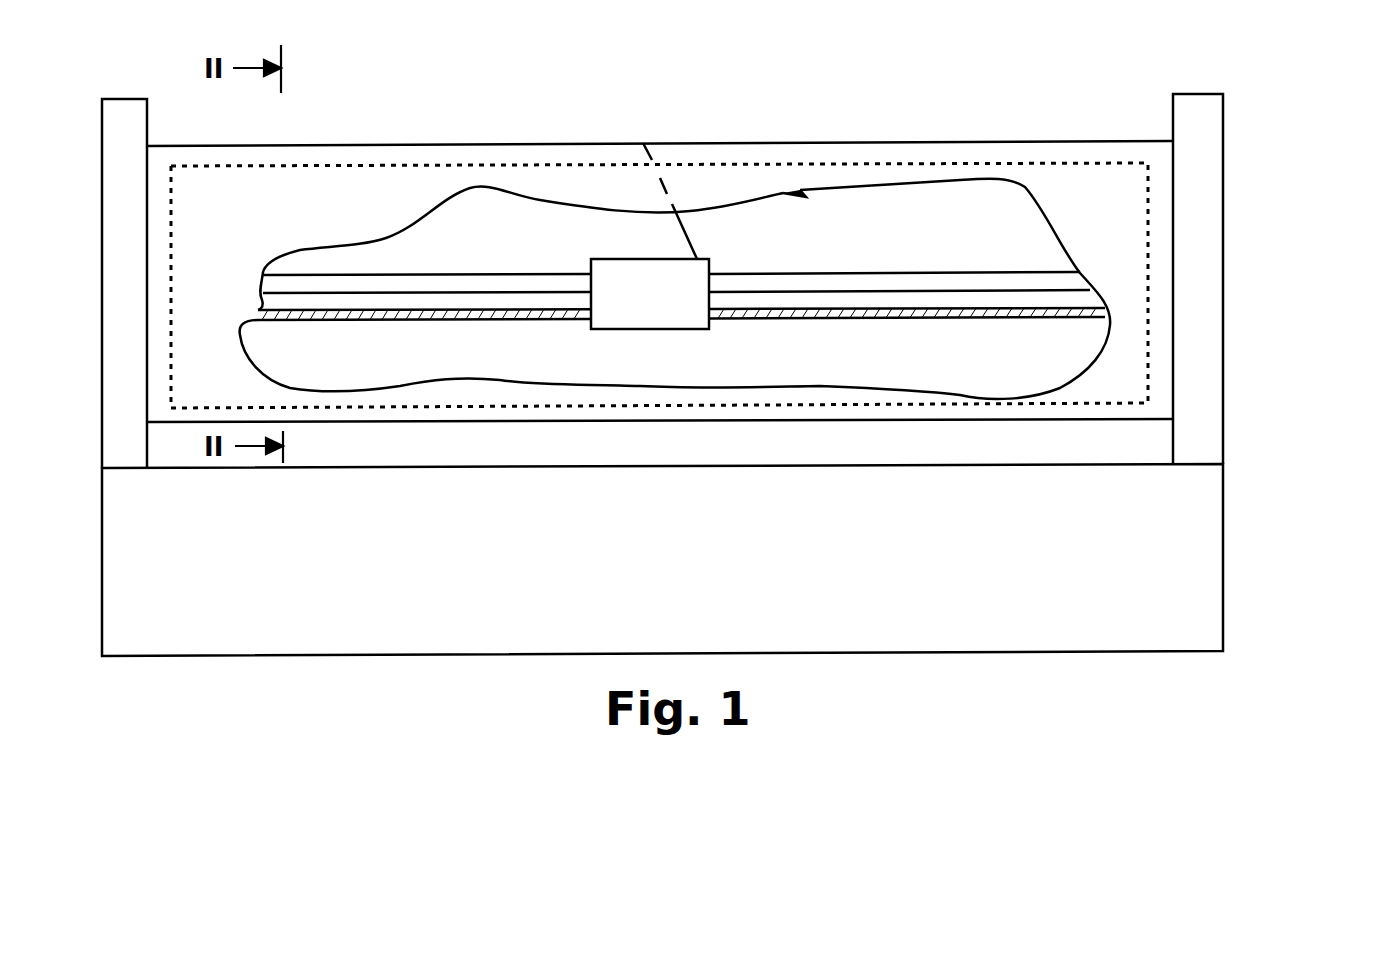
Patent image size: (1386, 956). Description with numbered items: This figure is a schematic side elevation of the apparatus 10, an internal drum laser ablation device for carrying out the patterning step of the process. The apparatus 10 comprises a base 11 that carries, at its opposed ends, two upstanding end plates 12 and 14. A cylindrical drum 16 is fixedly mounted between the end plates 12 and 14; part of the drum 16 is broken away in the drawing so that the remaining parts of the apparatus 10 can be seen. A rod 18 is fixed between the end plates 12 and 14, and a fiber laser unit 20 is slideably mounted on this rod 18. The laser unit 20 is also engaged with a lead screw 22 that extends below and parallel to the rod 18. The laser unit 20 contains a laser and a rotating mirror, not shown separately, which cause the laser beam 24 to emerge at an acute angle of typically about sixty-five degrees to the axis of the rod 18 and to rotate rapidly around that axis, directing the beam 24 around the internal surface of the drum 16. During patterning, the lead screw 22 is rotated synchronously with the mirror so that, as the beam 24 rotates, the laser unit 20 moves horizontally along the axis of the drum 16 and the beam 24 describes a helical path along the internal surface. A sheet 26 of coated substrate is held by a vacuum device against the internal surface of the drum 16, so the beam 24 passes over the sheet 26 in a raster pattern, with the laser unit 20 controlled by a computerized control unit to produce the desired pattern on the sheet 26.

The apparatus 10 is at (510, 90).
The base 11 is at (690, 577).
The end plate 12 is at (117, 260).
The end plate 14 is at (1195, 255).
The cylindrical drum 16 is at (912, 155).
The rod 18 is at (877, 283).
The fiber laser unit 20 is at (632, 311).
The lead screw 22 is at (882, 312).
The laser beam 24 is at (690, 237).
The sheet 26 is at (1150, 374).